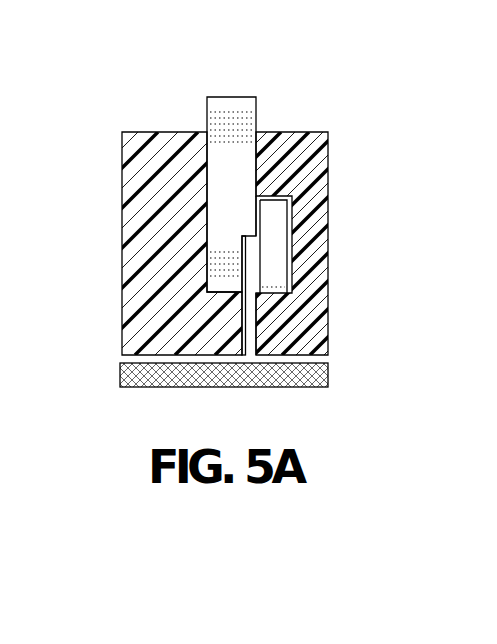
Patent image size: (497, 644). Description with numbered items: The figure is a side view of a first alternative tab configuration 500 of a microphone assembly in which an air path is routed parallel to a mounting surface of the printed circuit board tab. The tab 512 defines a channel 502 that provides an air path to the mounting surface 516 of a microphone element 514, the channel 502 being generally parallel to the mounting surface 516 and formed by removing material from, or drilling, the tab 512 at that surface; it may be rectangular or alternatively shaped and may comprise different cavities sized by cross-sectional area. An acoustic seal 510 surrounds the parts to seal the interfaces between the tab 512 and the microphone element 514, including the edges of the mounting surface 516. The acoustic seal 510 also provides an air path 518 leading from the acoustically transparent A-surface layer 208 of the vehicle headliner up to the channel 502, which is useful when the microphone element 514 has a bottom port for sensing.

The first alternative tab configuration 500 is at (165, 77).
The acoustic seal 510 is at (120, 248).
The tab 512 is at (207, 170).
The microphone element 514 is at (293, 243).
The mounting surface 516 is at (250, 213).
The channel 502 is at (250, 254).
The air path 518 is at (250, 350).
The A-surface layer 208 is at (118, 373).